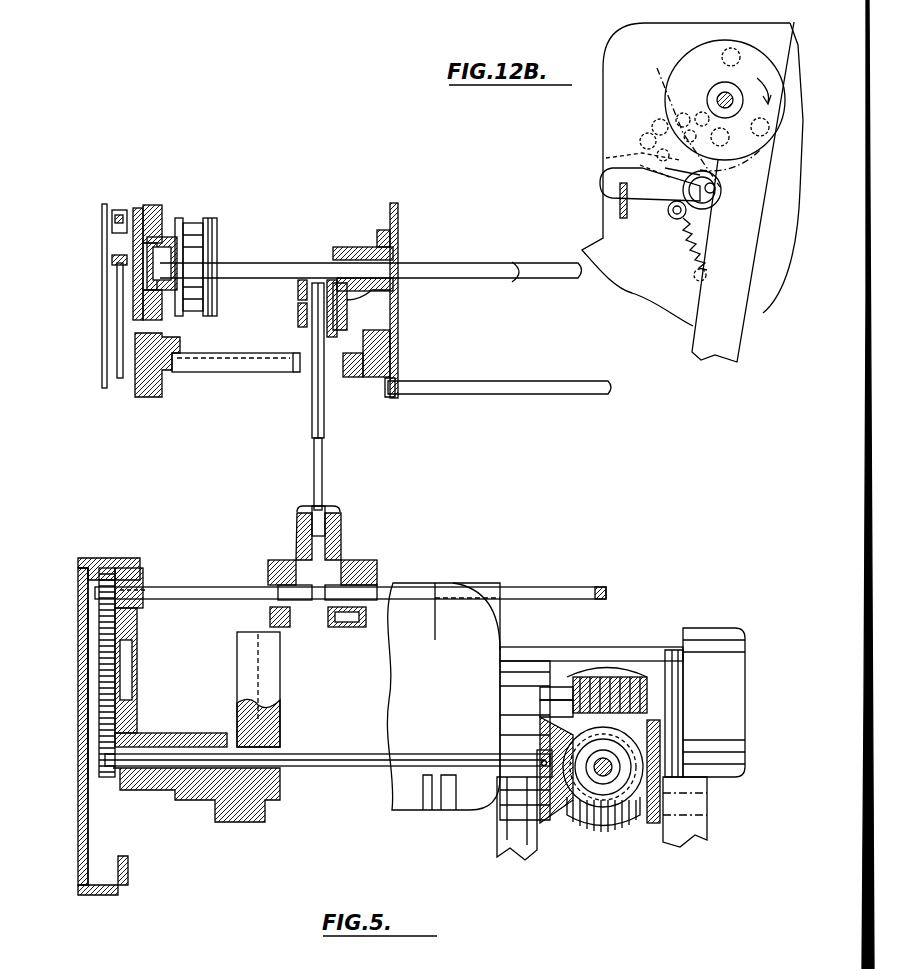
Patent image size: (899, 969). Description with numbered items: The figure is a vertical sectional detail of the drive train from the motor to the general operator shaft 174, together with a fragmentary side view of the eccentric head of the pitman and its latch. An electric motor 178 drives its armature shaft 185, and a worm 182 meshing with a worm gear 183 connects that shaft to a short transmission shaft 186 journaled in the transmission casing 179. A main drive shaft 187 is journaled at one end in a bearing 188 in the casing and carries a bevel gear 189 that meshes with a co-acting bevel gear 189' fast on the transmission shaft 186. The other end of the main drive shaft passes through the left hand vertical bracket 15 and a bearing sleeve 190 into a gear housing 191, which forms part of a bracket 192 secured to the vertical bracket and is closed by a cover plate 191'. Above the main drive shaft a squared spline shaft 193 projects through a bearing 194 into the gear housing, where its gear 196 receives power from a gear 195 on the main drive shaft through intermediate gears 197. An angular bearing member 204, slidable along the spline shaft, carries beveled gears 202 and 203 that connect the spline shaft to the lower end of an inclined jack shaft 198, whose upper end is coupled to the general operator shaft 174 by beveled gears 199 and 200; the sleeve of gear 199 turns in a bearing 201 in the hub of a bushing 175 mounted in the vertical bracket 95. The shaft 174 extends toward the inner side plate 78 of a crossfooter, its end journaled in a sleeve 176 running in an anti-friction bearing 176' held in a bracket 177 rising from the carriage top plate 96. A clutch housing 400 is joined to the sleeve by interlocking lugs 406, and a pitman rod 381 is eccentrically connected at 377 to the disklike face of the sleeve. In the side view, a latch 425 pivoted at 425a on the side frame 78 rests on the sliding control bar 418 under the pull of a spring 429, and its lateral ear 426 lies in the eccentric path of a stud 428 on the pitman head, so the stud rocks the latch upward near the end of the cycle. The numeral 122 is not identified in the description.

In FIG. 5, the vertical bracket 15 is at (273, 701).
In FIG. 12B, the side plate 78 is at (603, 113).
In FIG. 5, the side plate 78 is at (102, 374).
In FIG. 5, the vertical bracket 95 is at (405, 210).
In FIG. 5, the carriage top plate 96 is at (163, 367).
In FIG. 5, the shaft 122 is at (510, 383).
In FIG. 12B, the general operator shaft 174 is at (714, 192).
In FIG. 5, the general operator shaft 174 is at (487, 266).
In FIG. 5, the bushing 175 is at (368, 248).
In FIG. 5, the sleeve 176 is at (155, 250).
In FIG. 12B, the anti-friction bearing 176' is at (721, 203).
In FIG. 5, the anti-friction bearing 176' is at (99, 275).
In FIG. 5, the bracket 177 is at (140, 340).
In FIG. 5, the electric motor 178 is at (403, 731).
In FIG. 5, the transmission casing 179 is at (607, 658).
In FIG. 5, the worm 182 is at (585, 670).
In FIG. 5, the worm gear 183 is at (545, 709).
In FIG. 5, the armature shaft 185 is at (540, 692).
In FIG. 5, the transmission shaft 186 is at (617, 823).
In FIG. 5, the main drive shaft 187 is at (300, 757).
In FIG. 5, the bearing 188 is at (533, 838).
In FIG. 5, the bevel gear 189 is at (600, 788).
In FIG. 5, the bevel gear 189' is at (705, 702).
In FIG. 5, the bearing sleeve 190 is at (217, 714).
In FIG. 5, the gear housing 191 is at (145, 650).
In FIG. 5, the cover plate 191' is at (57, 690).
In FIG. 5, the bracket 192 is at (214, 797).
In FIG. 5, the spline shaft 193 is at (535, 603).
In FIG. 5, the bearing 194 is at (137, 569).
In FIG. 5, the gear 195 is at (103, 748).
In FIG. 5, the gear 196 is at (103, 594).
In FIG. 5, the intermediate gear 197 is at (141, 668).
In FIG. 5, the jack shaft 198 is at (312, 478).
In FIG. 5, the beveled gear 199 is at (302, 283).
In FIG. 5, the beveled gear 200 is at (335, 253).
In FIG. 5, the bearing 201 is at (300, 313).
In FIG. 5, the beveled gear 202 is at (338, 615).
In FIG. 5, the beveled gear 203 is at (305, 592).
In FIG. 5, the angular bearing member 204 is at (340, 557).
In FIG. 12B, the eccentric connection 377 is at (721, 84).
In FIG. 5, the eccentric connection 377 is at (118, 243).
In FIG. 12B, the pitman rod 381 is at (735, 338).
In FIG. 5, the pitman rod 381 is at (122, 313).
In FIG. 5, the housing 400 is at (187, 227).
In FIG. 5, the interlocking lug 406 is at (173, 262).
In FIG. 12B, the sliding control bar 418 is at (618, 209).
In FIG. 12B, the latch 425 is at (600, 176).
In FIG. 12B, the pivot 425a is at (708, 206).
In FIG. 12B, the lateral ear 426 is at (668, 170).
In FIG. 12B, the stud 428 is at (707, 160).
In FIG. 5, the stud 428 is at (112, 259).
In FIG. 12B, the spring 429 is at (688, 268).